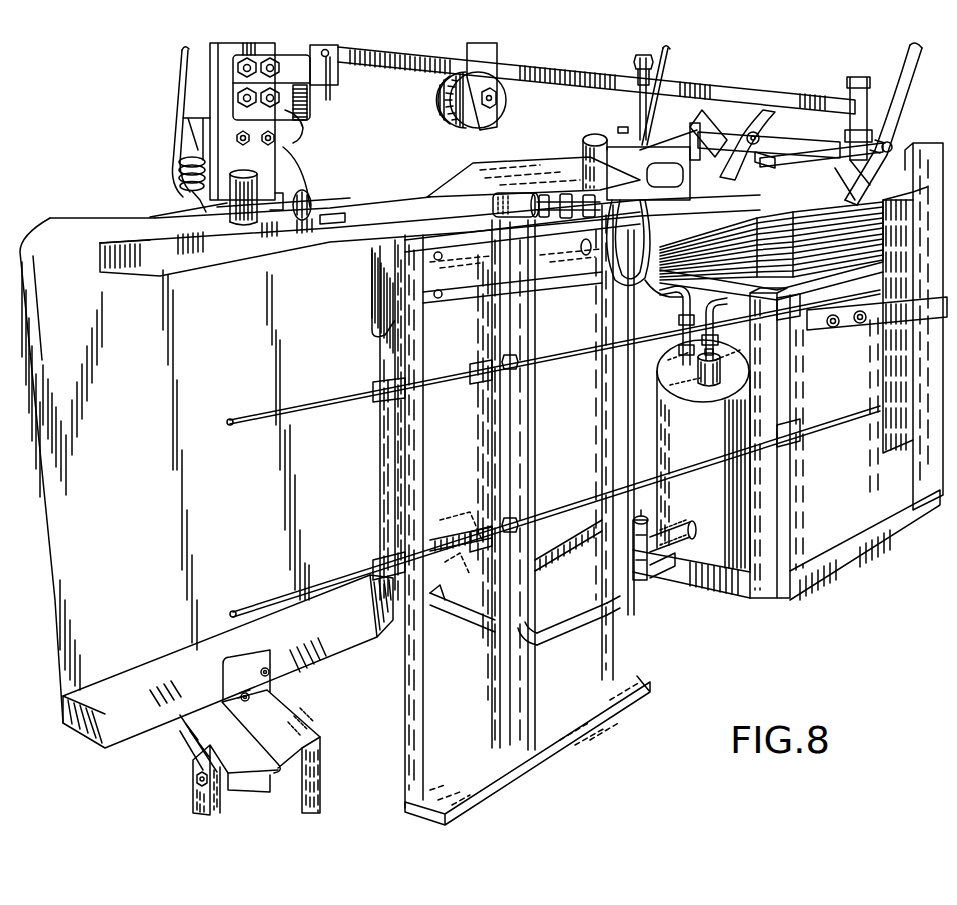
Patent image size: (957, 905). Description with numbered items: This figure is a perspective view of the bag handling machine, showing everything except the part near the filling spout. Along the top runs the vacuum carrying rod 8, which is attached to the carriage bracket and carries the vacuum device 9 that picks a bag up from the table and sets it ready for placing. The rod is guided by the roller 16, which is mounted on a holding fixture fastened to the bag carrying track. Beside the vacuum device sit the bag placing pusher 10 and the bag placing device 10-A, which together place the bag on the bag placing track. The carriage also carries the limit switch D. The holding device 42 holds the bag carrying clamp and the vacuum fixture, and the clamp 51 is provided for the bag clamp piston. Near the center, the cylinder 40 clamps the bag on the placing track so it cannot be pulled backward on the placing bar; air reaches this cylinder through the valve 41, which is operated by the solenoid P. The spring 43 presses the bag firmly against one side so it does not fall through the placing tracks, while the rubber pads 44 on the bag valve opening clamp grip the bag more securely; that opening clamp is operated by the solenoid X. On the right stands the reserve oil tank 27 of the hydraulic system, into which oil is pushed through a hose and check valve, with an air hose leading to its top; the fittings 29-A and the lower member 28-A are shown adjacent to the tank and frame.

The vacuum carrying rod 8 is at (716, 88).
The vacuum device 9 is at (852, 192).
The bag placing pusher 10 is at (767, 112).
The bag placing device 10-A is at (786, 140).
The roller 16 is at (446, 117).
The reserve oil tank 27 is at (693, 504).
The tray 28-A is at (578, 643).
The pipe fittings 29-A is at (694, 302).
The cylinder 40 is at (545, 200).
The valve 41 is at (600, 212).
The holding device 42 is at (340, 83).
The spring 43 is at (343, 220).
The rubber pads 44 is at (241, 662).
The clamp 51 is at (298, 131).
The limit switch D is at (197, 137).
The solenoid P is at (597, 140).
The solenoid X is at (305, 724).